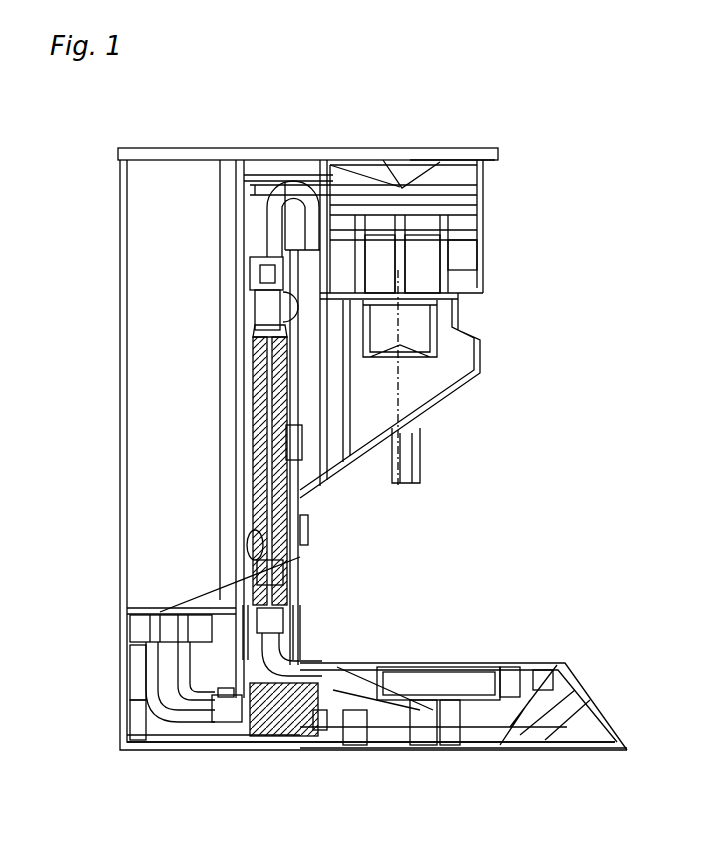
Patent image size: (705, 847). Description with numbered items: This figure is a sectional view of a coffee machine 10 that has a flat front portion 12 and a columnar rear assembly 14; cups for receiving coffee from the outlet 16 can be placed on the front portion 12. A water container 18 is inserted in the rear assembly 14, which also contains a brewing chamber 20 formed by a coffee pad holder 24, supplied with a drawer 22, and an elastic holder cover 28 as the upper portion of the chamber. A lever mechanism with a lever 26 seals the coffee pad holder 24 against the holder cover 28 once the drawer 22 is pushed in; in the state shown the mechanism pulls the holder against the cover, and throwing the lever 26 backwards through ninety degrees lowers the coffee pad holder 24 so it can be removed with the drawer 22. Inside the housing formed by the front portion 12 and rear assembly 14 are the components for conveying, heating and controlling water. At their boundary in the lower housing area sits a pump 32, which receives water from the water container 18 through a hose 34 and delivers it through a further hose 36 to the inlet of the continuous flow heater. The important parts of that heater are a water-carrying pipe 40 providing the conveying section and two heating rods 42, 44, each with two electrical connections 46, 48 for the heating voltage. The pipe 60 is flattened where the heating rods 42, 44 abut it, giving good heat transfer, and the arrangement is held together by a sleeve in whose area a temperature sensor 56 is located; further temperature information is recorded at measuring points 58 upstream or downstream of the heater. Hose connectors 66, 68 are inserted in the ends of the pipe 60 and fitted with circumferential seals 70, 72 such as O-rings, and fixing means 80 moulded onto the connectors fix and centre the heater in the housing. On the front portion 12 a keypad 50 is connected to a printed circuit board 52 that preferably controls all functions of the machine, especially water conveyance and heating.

The coffee machine 10 is at (66, 197).
The front portion 12 is at (547, 660).
The rear assembly 14 is at (118, 680).
The outlet 16 is at (420, 452).
The water container 18 is at (122, 423).
The brewing chamber 20 is at (482, 205).
The drawer 22 is at (483, 253).
The coffee pad holder 24 is at (482, 230).
The lever 26 is at (460, 152).
The holder cover 28 is at (480, 188).
The pump 32 is at (282, 752).
The hose 34 is at (160, 727).
The further hose 36 is at (353, 663).
The pipe 40 is at (283, 573).
The heating rod 42 is at (240, 513).
The heating rod 44 is at (302, 527).
The electrical connection 46 is at (260, 320).
The electrical connection 48 is at (232, 561).
The keypad 50 is at (600, 712).
The printed circuit board 52 is at (487, 753).
The temperature sensor 56 is at (288, 450).
The measuring points 58 is at (247, 243).
The pipe 60 is at (273, 625).
The hose connector 66 is at (303, 605).
The hose connector 68 is at (257, 297).
The circumferential seal 70 is at (257, 590).
The circumferential seal 72 is at (247, 340).
The fixing means 80 is at (247, 276).